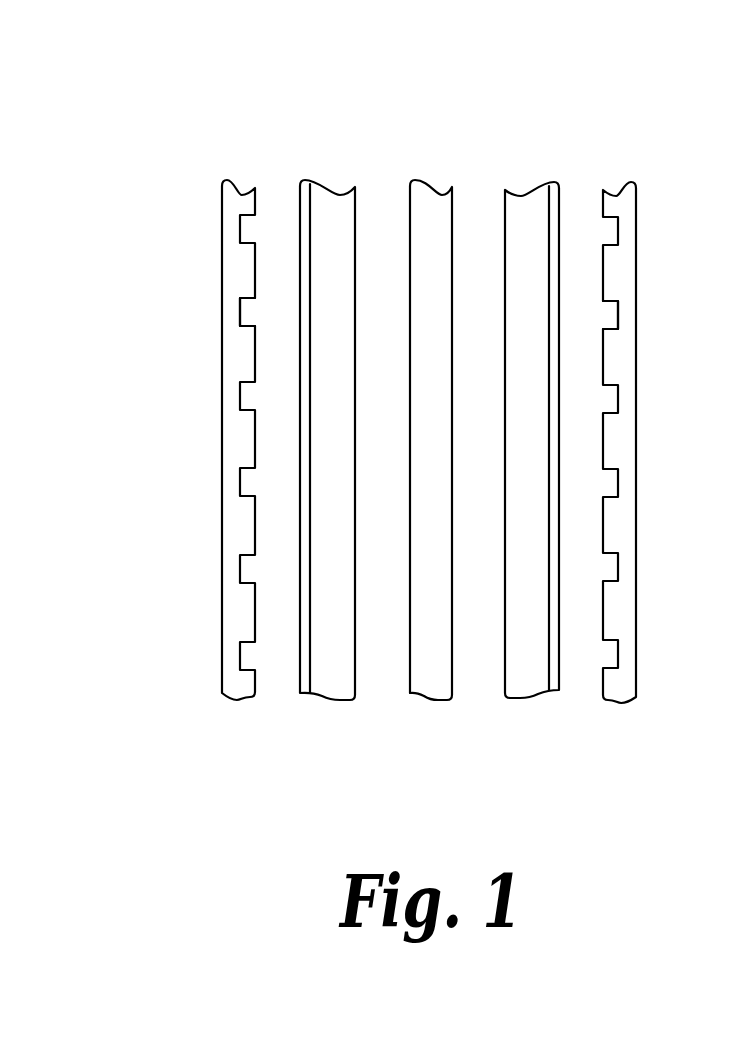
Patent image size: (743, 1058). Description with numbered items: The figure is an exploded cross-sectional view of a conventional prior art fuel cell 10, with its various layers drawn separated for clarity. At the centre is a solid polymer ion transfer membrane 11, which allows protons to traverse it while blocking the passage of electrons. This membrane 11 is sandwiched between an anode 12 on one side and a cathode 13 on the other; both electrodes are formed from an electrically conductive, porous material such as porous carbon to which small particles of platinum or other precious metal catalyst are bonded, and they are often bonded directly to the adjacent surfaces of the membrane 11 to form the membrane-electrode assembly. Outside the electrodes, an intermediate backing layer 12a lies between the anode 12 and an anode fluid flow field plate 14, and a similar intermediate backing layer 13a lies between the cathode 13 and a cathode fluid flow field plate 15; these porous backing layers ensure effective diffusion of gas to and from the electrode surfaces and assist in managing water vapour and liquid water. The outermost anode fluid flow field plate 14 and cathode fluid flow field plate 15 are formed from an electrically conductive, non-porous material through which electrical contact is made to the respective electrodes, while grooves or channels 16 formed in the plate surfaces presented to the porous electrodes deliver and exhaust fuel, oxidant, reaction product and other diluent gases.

The fuel cell 10 is at (252, 131).
The solid polymer ion transfer membrane 11 is at (432, 700).
The anode 12 is at (333, 700).
The intermediate backing layer 12a is at (302, 181).
The cathode 13 is at (527, 698).
The intermediate backing layer 13a is at (556, 182).
The anode fluid flow field plate 14 is at (235, 700).
The cathode fluid flow field plate 15 is at (618, 700).
The grooves or channels 16 is at (245, 313).